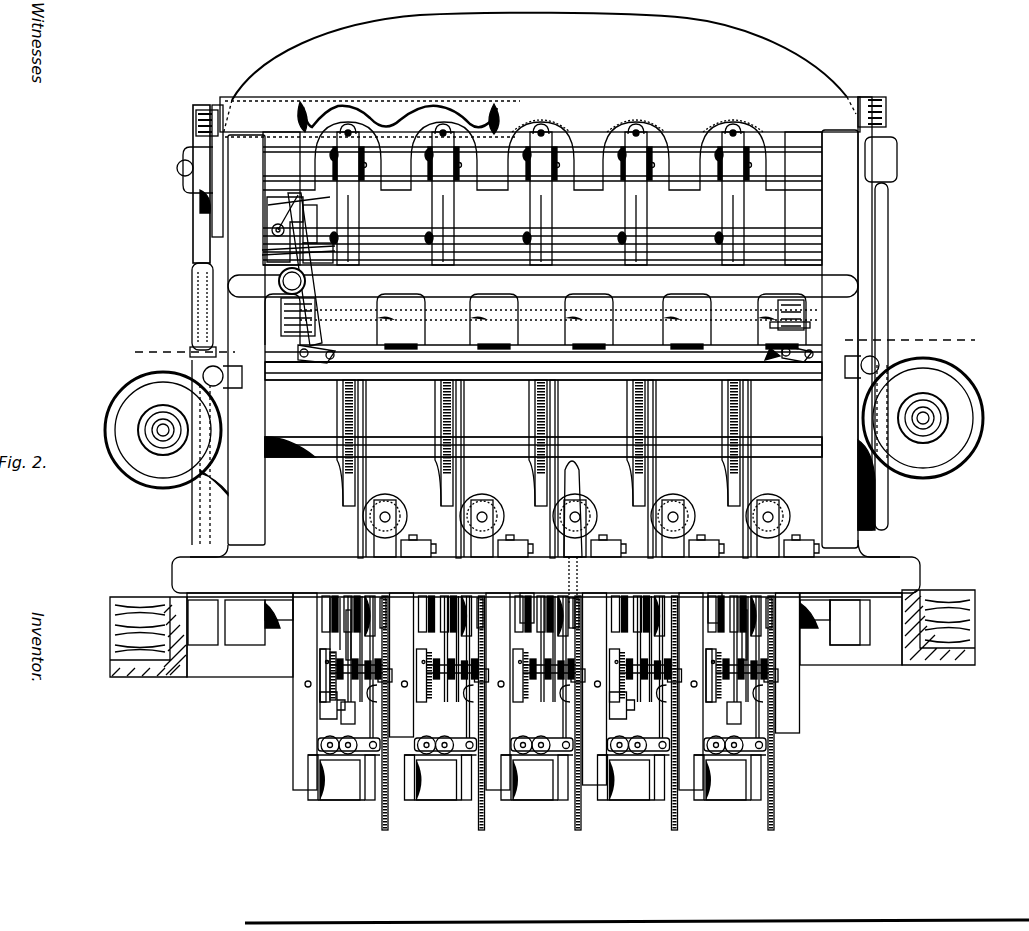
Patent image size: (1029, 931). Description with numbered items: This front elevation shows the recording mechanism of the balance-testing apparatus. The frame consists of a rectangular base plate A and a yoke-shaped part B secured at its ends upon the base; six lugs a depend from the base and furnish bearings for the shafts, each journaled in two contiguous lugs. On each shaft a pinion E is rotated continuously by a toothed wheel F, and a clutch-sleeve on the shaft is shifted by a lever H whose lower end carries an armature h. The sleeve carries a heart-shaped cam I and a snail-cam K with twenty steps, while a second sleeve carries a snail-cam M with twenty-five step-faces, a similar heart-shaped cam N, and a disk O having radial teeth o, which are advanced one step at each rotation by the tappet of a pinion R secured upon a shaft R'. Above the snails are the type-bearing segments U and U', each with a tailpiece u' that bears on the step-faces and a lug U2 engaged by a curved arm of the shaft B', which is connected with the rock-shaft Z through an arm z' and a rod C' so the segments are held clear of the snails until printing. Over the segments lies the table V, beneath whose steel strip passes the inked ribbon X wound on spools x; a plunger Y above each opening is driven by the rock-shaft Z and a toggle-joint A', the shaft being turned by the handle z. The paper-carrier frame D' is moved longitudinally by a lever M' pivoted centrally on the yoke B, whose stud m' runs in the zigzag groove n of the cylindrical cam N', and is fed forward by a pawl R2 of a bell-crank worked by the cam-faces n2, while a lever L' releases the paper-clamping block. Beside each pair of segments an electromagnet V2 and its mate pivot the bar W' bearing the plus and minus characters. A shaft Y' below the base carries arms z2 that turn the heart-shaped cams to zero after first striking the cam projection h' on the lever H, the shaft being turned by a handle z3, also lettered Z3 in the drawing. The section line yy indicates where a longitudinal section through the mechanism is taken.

The yoke-shaped part B is at (549, 285).
The rectangular plate A is at (542, 601).
The rod C' is at (559, 380).
The arm z' is at (539, 116).
The handle z is at (637, 98).
The rock-shaft Z is at (775, 156).
The toggle-joint A' is at (542, 206).
The plunger Y is at (535, 319).
The pawl R2 is at (281, 328).
The lever L' is at (569, 335).
The cylindrical cam N' is at (280, 269).
The lever M' is at (314, 282).
The stud m' is at (267, 221).
The zigzag groove n is at (280, 210).
The cam-faces n2 is at (318, 212).
The frame D' is at (543, 386).
The table V is at (600, 380).
The segment U is at (538, 443).
The bar W' is at (553, 469).
The segment U' is at (534, 468).
The electromagnet V2 is at (398, 512).
The handle Z3 is at (578, 490).
The spool x is at (122, 470).
The inked ribbon X is at (240, 388).
The section line y is at (557, 341).
The lug a is at (293, 735).
The snail-cam K is at (640, 660).
The toothed wheel F is at (470, 815).
The lug U2 is at (537, 777).
The armature h is at (565, 713).
The pinion E is at (486, 655).
The shaft B' is at (544, 635).
The heart-shaped cam N is at (337, 608).
The shaft Y' is at (623, 595).
The disk O is at (326, 650).
The radial teeth o is at (324, 662).
The heart-shaped cam I is at (352, 660).
The arm z2 is at (388, 628).
The tailpiece u' is at (540, 627).
The handle z3 is at (578, 628).
The cam projection h' is at (591, 702).
The lever H is at (358, 712).
The pinion R is at (302, 693).
The shaft R' is at (342, 711).
The snail-cam M is at (631, 708).